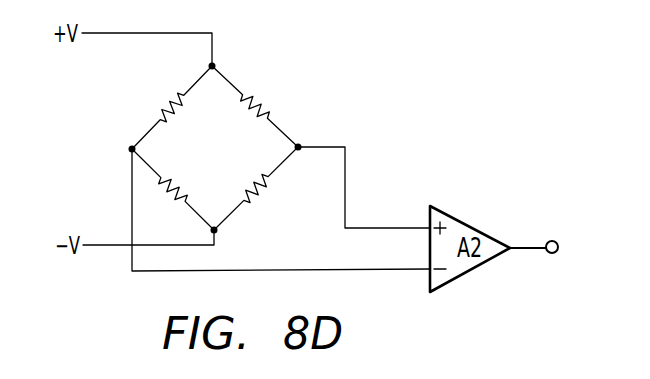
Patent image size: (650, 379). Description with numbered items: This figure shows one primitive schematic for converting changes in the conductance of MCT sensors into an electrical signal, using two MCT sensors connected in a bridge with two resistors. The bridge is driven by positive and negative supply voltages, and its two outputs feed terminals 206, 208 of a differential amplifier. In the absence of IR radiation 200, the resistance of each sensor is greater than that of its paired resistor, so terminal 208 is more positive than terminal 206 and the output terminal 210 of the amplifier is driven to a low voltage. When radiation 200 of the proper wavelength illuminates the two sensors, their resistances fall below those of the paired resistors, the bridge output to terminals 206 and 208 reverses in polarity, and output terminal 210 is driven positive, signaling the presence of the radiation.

The IR radiation 200 is at (182, 183).
The terminal of differential amplifier A2 206 is at (387, 227).
The terminal of differential amplifier A2 208 is at (386, 271).
The output terminal 210 is at (556, 239).